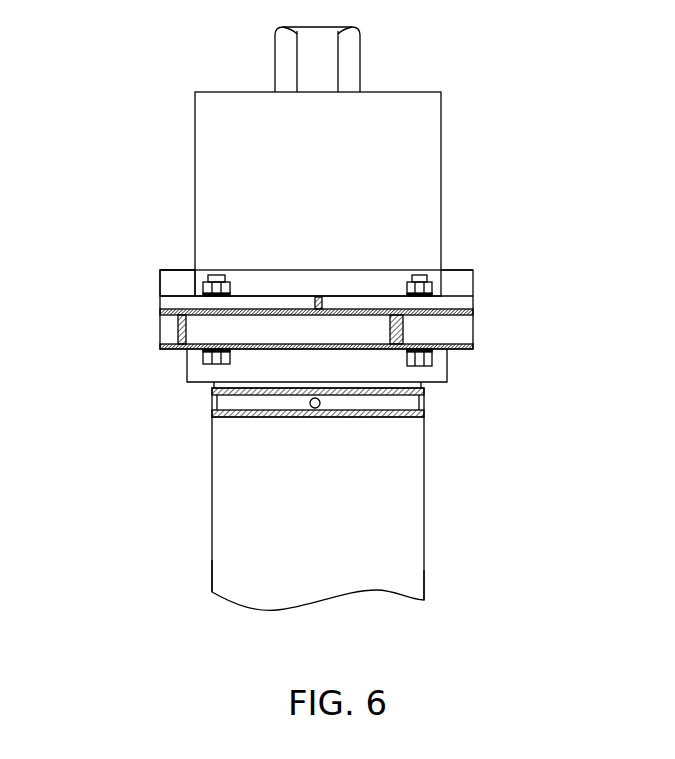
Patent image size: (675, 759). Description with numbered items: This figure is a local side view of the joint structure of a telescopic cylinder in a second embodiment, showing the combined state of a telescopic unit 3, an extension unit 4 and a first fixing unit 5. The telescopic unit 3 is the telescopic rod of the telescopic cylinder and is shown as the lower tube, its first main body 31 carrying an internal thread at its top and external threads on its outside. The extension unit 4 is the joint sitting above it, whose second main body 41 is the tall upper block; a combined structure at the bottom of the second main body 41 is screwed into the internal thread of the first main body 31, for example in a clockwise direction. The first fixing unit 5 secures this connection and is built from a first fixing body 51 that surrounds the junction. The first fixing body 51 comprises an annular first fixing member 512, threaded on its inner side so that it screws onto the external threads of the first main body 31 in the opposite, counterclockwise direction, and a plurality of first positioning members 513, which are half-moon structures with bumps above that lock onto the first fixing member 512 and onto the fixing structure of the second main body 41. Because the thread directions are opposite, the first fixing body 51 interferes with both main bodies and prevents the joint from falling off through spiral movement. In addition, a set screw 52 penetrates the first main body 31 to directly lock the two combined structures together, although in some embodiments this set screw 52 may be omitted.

The extension unit 4 is at (148, 122).
The second main body 41 is at (407, 193).
The first fixing unit 5 is at (147, 290).
The first fixing body 51 is at (488, 330).
The first positioning member 513 is at (180, 282).
The first fixing member 512 is at (208, 332).
The set screw 52 is at (320, 403).
The first main body 31 is at (270, 533).
The telescopic unit 3 is at (458, 512).